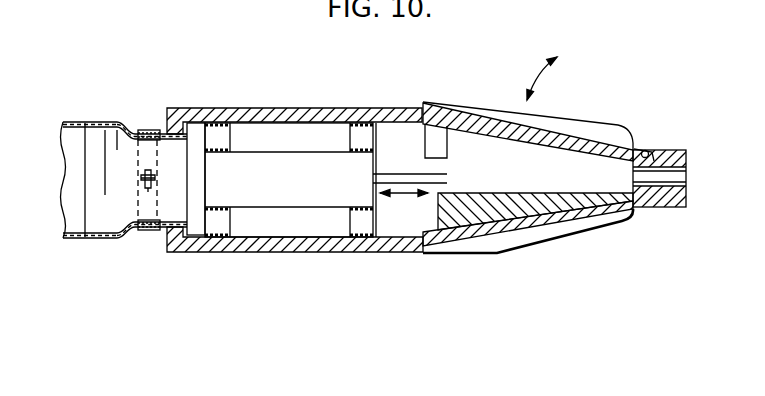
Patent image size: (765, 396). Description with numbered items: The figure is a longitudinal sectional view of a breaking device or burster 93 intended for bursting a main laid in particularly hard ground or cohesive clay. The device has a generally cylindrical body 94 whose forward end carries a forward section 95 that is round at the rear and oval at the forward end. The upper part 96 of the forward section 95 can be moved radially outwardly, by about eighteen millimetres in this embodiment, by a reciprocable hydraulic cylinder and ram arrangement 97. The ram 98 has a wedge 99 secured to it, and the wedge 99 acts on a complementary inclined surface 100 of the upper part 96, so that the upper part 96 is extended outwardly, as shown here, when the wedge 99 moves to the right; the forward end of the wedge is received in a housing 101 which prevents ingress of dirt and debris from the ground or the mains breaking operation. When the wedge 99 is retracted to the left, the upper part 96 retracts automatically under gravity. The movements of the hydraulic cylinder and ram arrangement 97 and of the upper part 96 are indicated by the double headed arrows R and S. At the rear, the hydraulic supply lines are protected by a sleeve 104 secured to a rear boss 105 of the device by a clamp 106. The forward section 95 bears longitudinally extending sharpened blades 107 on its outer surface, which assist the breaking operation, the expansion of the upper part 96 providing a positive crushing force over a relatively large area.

The breaking device 93 is at (293, 256).
The generally cylindrical body 94 is at (255, 112).
The forward section 95 is at (596, 247).
The upper part 96 is at (428, 134).
The hydraulic cylinder and ram arrangement 97 is at (358, 168).
The ram 98 is at (290, 179).
The wedge 99 is at (553, 130).
The inclined surface 100 is at (423, 132).
The housing 101 is at (672, 160).
The sleeve 104 is at (85, 238).
The rear boss 105 is at (118, 123).
The clamp 106 is at (147, 123).
The sharpened blades 107 is at (505, 112).
The double headed arrow R is at (405, 196).
The double headed arrow S is at (547, 76).